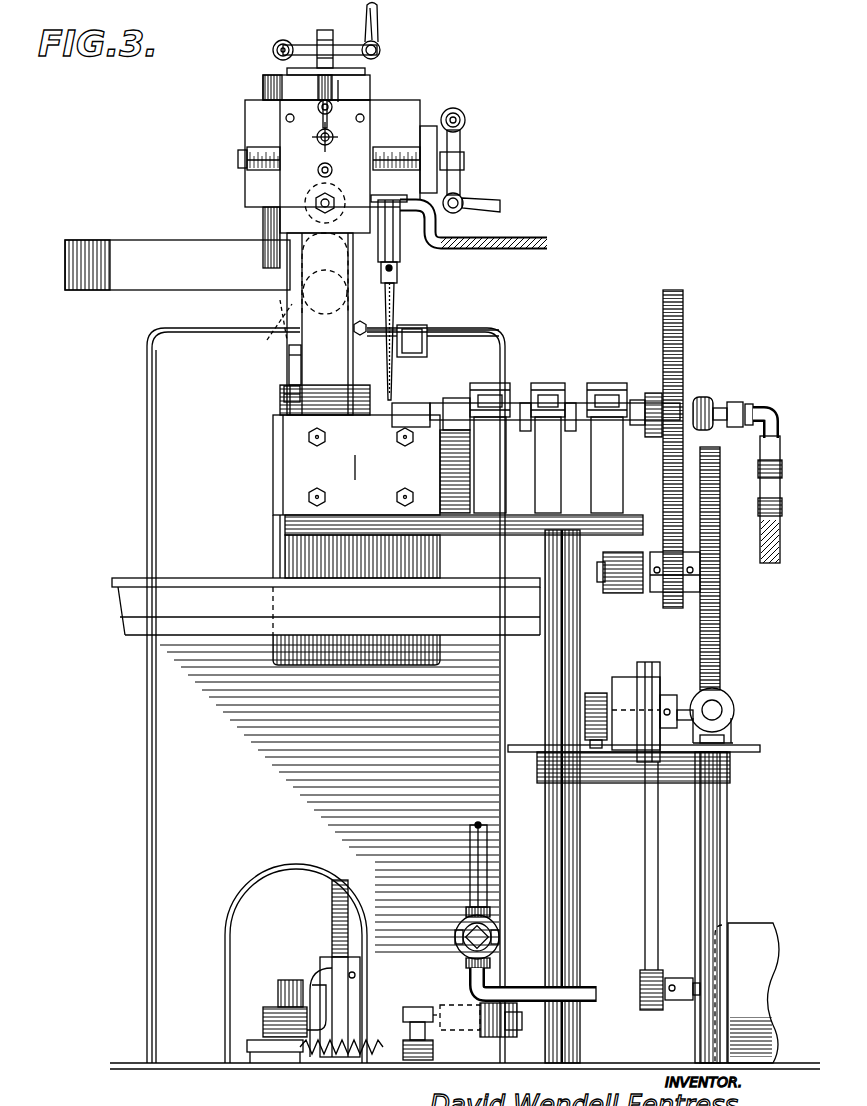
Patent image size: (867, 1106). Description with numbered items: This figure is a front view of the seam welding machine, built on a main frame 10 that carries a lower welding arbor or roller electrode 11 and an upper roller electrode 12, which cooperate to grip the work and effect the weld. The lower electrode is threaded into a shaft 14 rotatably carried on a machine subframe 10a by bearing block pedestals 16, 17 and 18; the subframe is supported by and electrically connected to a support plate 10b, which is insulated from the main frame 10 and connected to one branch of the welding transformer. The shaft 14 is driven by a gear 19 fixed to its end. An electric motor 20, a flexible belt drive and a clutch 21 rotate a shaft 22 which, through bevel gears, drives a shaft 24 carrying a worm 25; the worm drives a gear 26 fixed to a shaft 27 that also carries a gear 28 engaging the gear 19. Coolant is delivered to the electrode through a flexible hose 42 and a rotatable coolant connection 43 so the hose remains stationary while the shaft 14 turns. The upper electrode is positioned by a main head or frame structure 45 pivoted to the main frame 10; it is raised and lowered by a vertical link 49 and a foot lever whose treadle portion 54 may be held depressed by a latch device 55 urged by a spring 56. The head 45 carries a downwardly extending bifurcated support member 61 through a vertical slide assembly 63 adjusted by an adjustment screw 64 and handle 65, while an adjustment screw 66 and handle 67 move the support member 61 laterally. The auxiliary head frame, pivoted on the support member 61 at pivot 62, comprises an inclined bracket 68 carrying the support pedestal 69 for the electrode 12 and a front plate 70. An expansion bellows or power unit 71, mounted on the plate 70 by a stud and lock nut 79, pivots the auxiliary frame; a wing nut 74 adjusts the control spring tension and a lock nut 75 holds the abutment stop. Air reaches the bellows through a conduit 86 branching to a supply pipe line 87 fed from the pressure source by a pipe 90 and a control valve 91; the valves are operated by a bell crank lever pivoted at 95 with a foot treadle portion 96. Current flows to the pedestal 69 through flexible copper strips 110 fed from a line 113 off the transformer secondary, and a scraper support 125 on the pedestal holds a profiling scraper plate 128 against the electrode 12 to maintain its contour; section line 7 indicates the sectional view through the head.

The section line 7 is at (348, 90).
The main frame 10 is at (165, 738).
The machine subframe 10a is at (290, 515).
The support plate 10b is at (290, 545).
The lower welding arbor or roller electrode 11 is at (394, 403).
The upper roller electrode 12 is at (396, 306).
The electrode support shaft 14 is at (578, 422).
The bearing block pedestal 16 is at (493, 387).
The bearing block pedestal 17 is at (548, 387).
The bearing block pedestal 18 is at (598, 387).
The gear 19 is at (684, 340).
The electric motor 20 is at (748, 930).
The clutch 21 is at (640, 750).
The shaft 22 is at (686, 710).
The shaft 24 is at (716, 710).
The worm 25 is at (735, 718).
The gear 26 is at (708, 647).
The shaft 27 is at (602, 588).
The gear 28 is at (668, 604).
The flexible hose 42 is at (766, 560).
The rotatable coolant connection 43 is at (704, 398).
The main head or frame structure 45 is at (258, 80).
The vertically extending shaft or link 49 is at (332, 908).
The treadle portion 54 is at (263, 1020).
The latch device 55 is at (284, 982).
The spring 56 is at (330, 1056).
The bifurcated support member 61 is at (353, 187).
The pivot 62 is at (284, 397).
The vertical slide assembly 63 is at (405, 117).
The adjustment screw 64 is at (318, 98).
The handle 65 is at (378, 18).
The adjustment screw 66 is at (258, 147).
The handle 67 is at (490, 200).
The inclined bracket 68 is at (318, 406).
The support pedestal 69 is at (295, 347).
The front plate 70 is at (320, 120).
The expansion bellows or power unit 71 is at (270, 243).
The wing nut 74 is at (340, 128).
The lock nut 75 is at (312, 172).
The lock nut 79 is at (312, 205).
The conduit 86 is at (525, 243).
The supply pipe line 87 is at (470, 840).
The pipe 90 is at (518, 985).
The control valve 91 is at (458, 930).
The pivot 95 is at (518, 1022).
The foot treadle portion 96 is at (410, 1022).
The copper strips 110 is at (100, 244).
The line 113 is at (268, 340).
The scraper support 125 is at (386, 250).
The profiling scraper plate 128 is at (393, 270).